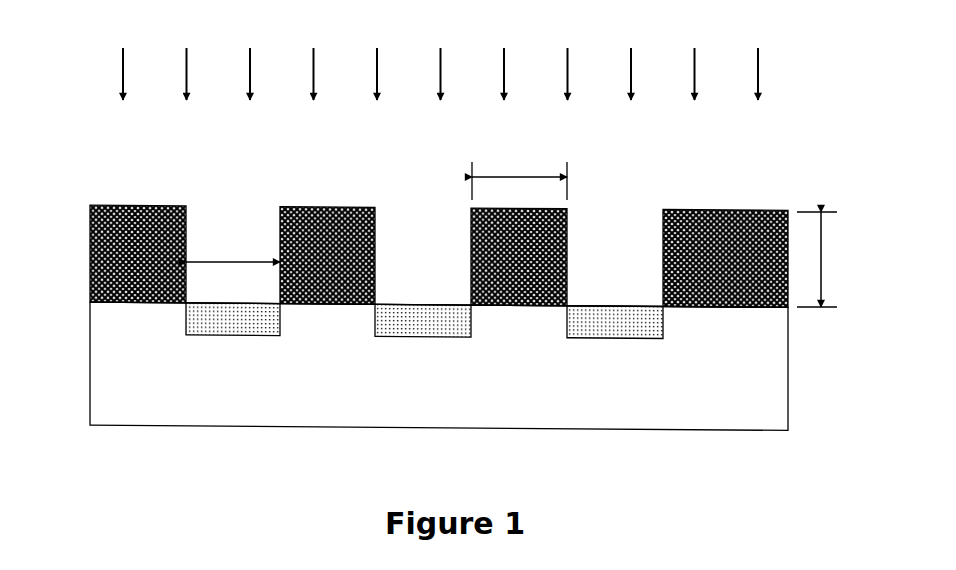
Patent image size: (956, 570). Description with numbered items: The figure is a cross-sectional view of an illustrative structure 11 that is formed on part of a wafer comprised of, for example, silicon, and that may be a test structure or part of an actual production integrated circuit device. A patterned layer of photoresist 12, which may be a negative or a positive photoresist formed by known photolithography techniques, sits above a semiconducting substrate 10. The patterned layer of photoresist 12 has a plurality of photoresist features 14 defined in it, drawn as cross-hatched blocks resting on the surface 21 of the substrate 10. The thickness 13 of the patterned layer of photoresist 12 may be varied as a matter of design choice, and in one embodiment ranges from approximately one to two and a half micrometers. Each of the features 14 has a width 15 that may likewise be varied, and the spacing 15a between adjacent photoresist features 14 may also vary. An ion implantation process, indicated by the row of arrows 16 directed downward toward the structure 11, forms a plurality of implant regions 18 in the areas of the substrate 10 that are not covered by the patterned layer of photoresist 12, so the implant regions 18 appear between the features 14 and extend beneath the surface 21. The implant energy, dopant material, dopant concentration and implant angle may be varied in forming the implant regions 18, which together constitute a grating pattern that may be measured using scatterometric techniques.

The semiconducting substrate 10 is at (740, 397).
The structure 11 is at (456, 304).
The patterned layer of photoresist 12 is at (482, 207).
The thickness 13 is at (822, 262).
The photoresist features 14 is at (282, 206).
The width 15 is at (518, 175).
The spacing 15a is at (233, 258).
The arrows 16 is at (122, 62).
The implant regions 18 is at (232, 314).
The surface 21 is at (153, 300).